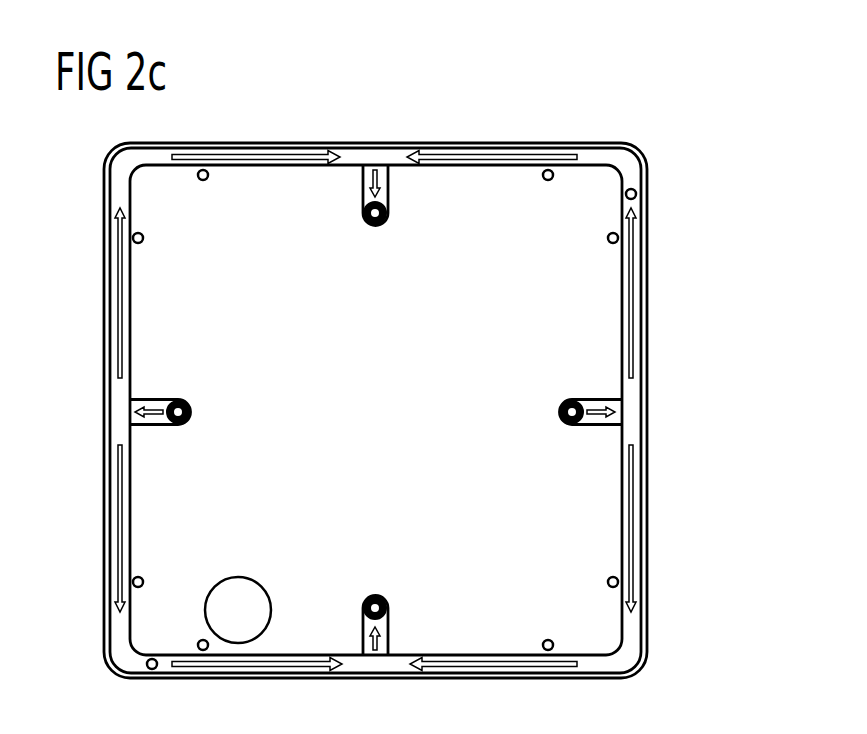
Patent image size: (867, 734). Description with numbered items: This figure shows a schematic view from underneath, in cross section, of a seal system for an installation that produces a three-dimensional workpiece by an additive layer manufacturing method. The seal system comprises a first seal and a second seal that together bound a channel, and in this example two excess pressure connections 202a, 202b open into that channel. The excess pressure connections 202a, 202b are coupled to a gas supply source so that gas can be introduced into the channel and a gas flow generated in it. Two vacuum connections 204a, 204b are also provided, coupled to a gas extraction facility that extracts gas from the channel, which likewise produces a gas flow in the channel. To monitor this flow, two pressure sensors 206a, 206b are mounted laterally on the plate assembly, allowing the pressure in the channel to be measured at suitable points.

The excess pressure connection 202a is at (182, 402).
The excess pressure connection 202b is at (577, 399).
The vacuum connection 204a is at (360, 603).
The vacuum connection 204b is at (360, 218).
The pressure sensor 206a is at (637, 193).
The pressure sensor 206b is at (146, 672).